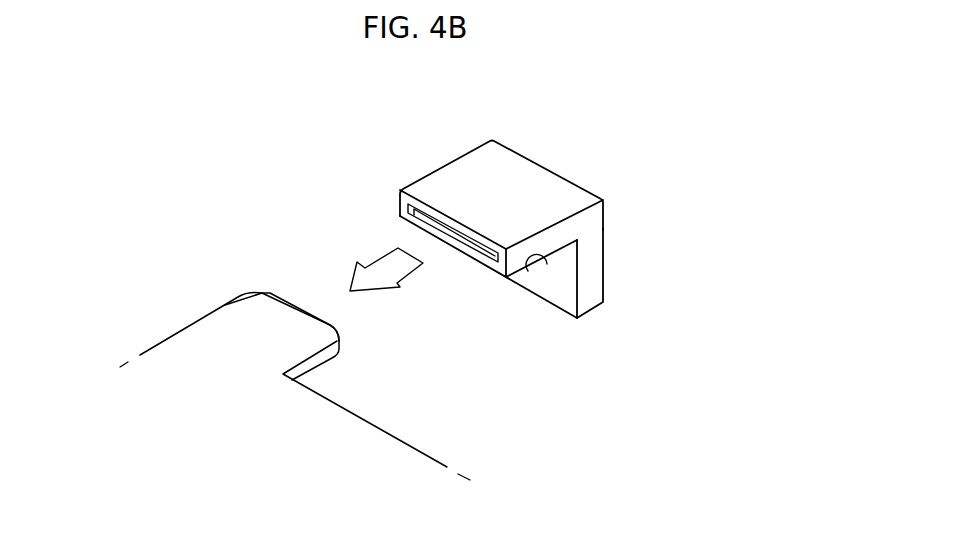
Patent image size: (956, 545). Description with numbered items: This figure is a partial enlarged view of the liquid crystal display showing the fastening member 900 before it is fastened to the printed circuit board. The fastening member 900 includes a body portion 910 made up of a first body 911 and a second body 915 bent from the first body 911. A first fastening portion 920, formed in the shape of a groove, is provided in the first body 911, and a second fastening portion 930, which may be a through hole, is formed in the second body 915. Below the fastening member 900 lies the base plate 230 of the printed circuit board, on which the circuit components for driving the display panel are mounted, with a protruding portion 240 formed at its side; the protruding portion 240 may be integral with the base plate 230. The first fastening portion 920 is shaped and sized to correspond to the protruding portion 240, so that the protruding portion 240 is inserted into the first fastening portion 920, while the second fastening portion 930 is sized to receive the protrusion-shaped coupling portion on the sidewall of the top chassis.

The fastening member 900 is at (512, 216).
The body portion 910 is at (512, 249).
The first body 911 is at (482, 230).
The second body 915 is at (594, 292).
The first fastening portion 920 is at (427, 217).
The second fastening portion 930 is at (530, 270).
The base plate 230 is at (363, 457).
The protruding portion 240 is at (270, 323).